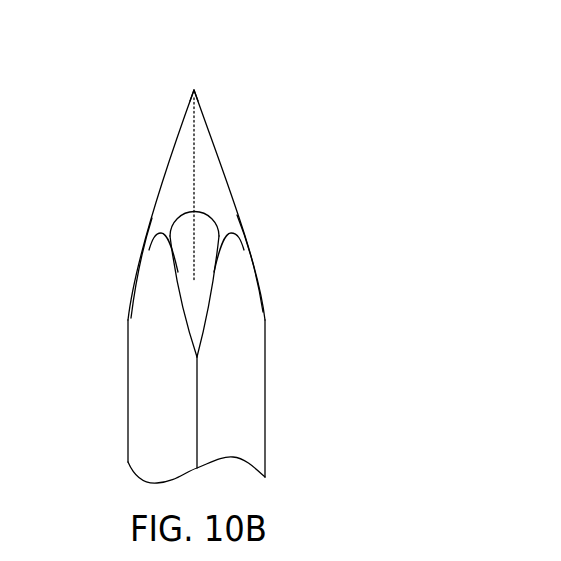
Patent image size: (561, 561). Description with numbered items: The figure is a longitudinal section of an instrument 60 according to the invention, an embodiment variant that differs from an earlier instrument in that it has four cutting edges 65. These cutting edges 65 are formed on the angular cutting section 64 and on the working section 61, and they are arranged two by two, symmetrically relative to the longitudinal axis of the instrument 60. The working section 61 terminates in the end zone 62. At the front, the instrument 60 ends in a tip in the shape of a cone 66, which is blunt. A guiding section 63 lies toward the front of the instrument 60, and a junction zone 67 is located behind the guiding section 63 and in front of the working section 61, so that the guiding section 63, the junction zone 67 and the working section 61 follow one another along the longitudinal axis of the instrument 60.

The instrument 60 is at (272, 425).
The working section 61 is at (127, 423).
The end zone 62 is at (128, 315).
The guiding section 63 is at (208, 160).
The angular cutting section 64 is at (138, 185).
The cutting edges 65 is at (137, 265).
The cone 66 is at (194, 88).
The junction zone 67 is at (200, 237).